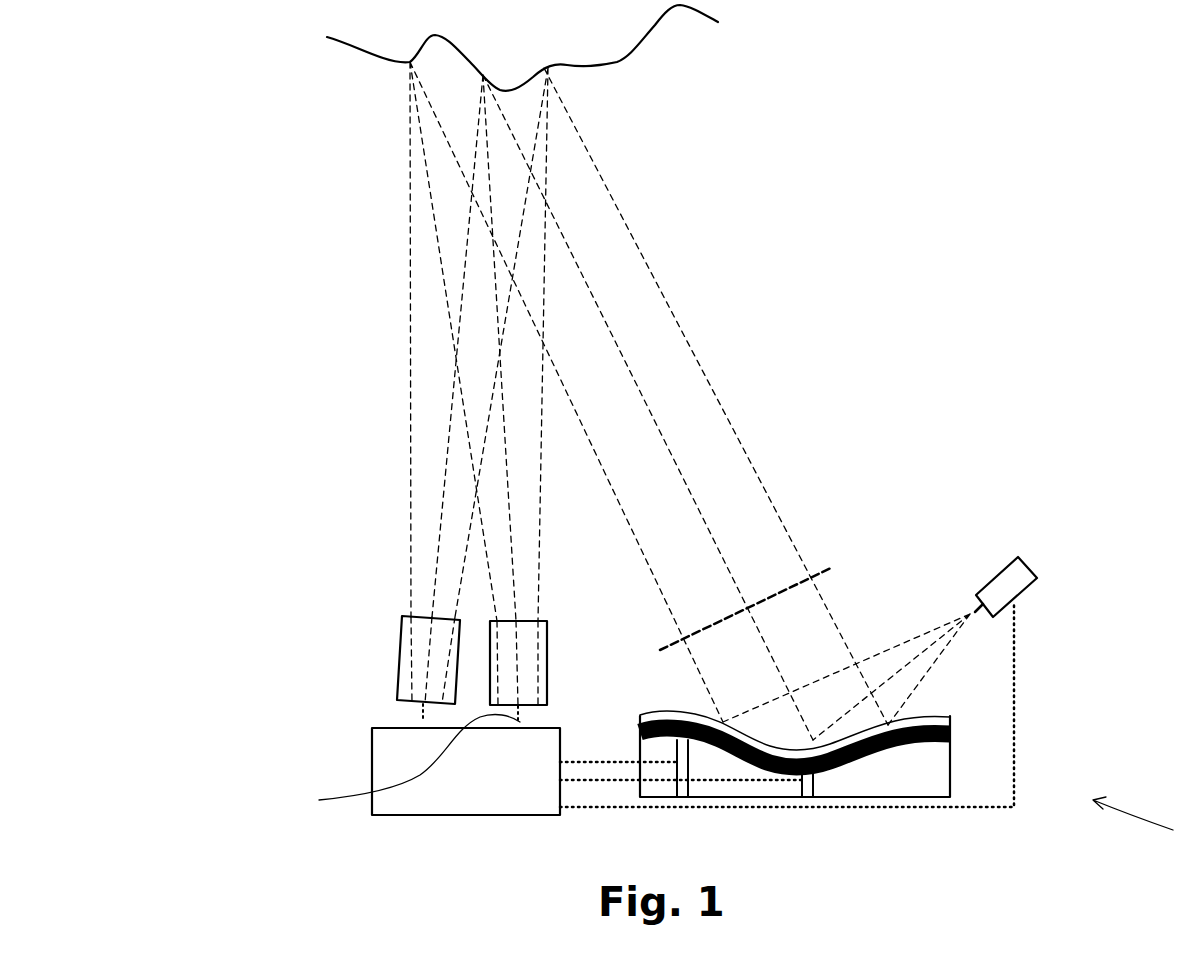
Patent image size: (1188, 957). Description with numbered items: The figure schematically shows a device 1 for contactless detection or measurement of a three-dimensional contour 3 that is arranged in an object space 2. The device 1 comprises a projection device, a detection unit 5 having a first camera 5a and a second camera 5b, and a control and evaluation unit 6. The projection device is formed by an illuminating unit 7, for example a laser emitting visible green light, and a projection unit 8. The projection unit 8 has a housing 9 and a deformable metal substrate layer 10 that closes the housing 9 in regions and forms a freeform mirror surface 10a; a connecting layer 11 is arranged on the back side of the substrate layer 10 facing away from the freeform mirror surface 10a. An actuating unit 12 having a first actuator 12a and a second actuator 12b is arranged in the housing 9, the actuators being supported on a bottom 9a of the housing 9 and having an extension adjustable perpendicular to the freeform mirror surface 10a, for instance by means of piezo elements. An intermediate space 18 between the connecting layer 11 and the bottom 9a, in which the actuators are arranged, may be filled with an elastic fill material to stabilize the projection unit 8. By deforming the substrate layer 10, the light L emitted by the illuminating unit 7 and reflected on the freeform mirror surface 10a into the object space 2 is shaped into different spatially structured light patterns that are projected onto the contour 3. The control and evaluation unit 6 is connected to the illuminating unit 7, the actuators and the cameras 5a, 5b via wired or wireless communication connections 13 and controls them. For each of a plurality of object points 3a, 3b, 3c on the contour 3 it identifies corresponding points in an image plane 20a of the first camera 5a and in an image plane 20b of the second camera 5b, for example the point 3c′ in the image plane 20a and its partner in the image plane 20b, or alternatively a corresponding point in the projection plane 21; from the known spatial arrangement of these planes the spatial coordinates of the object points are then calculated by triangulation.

The device 1 is at (1068, 400).
The object space 2 is at (249, 156).
The three-dimensional contour 3 is at (645, 35).
The object point 3a is at (407, 65).
The object point 3b is at (485, 70).
The object point 3c is at (560, 70).
The point in image plane of first camera 3c′ is at (443, 702).
The detection unit 5 is at (337, 621).
The first camera 5a is at (393, 698).
The second camera 5b is at (552, 697).
The control and evaluation unit 6 is at (490, 796).
The illuminating unit 7 is at (1025, 580).
The projection unit 8 is at (835, 850).
The housing 9 is at (950, 795).
The bottom of the housing 9a is at (900, 797).
The metal substrate layer 10 is at (928, 713).
The freeform mirror surface 10a is at (682, 712).
The connecting layer 11 is at (953, 730).
The actuating unit 12 is at (614, 840).
The first actuator 12a is at (692, 764).
The second actuator 12b is at (817, 787).
The communication connections 13 is at (395, 717).
The intermediate space 18 is at (723, 770).
The image plane of the first camera 20a is at (400, 690).
The image plane of the second camera 20b is at (550, 637).
The projection plane 21 is at (832, 570).
The light L is at (886, 615).